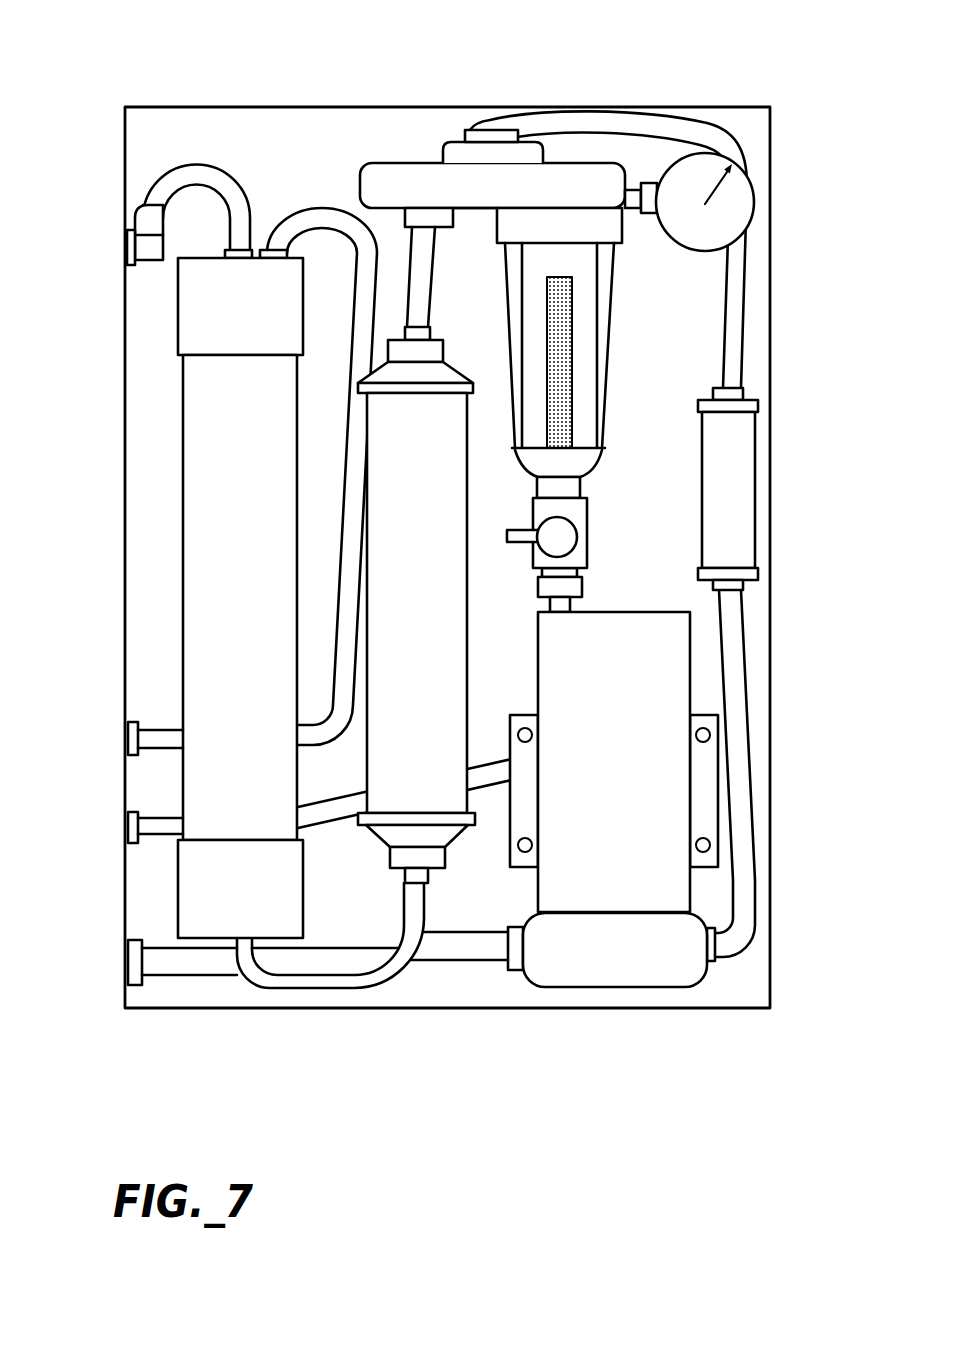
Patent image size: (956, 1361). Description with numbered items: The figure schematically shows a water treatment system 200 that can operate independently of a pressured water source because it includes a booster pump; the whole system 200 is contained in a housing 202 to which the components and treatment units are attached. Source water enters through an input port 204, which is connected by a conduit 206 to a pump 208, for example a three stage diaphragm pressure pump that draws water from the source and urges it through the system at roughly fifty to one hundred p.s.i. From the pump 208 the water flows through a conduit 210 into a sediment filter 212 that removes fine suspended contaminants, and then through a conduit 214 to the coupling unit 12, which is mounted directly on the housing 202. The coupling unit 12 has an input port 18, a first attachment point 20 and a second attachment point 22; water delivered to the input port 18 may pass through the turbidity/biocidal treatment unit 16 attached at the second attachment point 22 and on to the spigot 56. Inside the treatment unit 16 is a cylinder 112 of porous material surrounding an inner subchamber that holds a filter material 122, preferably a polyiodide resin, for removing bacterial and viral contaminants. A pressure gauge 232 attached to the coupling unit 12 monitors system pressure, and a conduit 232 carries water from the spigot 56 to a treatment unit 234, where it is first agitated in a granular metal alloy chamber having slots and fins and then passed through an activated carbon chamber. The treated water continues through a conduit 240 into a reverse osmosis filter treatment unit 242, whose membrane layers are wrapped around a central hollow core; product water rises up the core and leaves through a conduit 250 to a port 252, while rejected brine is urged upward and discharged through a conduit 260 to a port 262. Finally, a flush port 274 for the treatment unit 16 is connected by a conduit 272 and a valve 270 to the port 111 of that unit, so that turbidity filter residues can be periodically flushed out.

The coupling unit 12 is at (405, 156).
The treatment unit 16 is at (598, 360).
The input port 18 is at (462, 133).
The first attachment point 20 is at (466, 222).
The second attachment point 22 is at (628, 225).
The spigot 56 is at (427, 220).
The port 111 is at (570, 492).
The cylinder 112 is at (587, 312).
The filter material 122 is at (570, 405).
The system 200 is at (408, 1050).
The housing 202 is at (774, 927).
The input port 204 is at (125, 960).
The conduit 206 is at (455, 957).
The pump 208 is at (703, 673).
The conduit 210 is at (744, 842).
The sediment filter 212 is at (745, 508).
The conduit 214 is at (740, 333).
The pressure gauge / conduit 232 is at (425, 293).
The treatment unit 234 is at (473, 612).
The conduit 240 is at (335, 983).
The reverse osmosis filter treatment unit 242 is at (180, 478).
The conduit 250 is at (205, 173).
The port 252 is at (127, 250).
The conduit 260 is at (322, 217).
The port 262 is at (125, 743).
The valve 270 is at (594, 510).
The conduit 272 is at (565, 603).
The flush port 274 is at (125, 832).